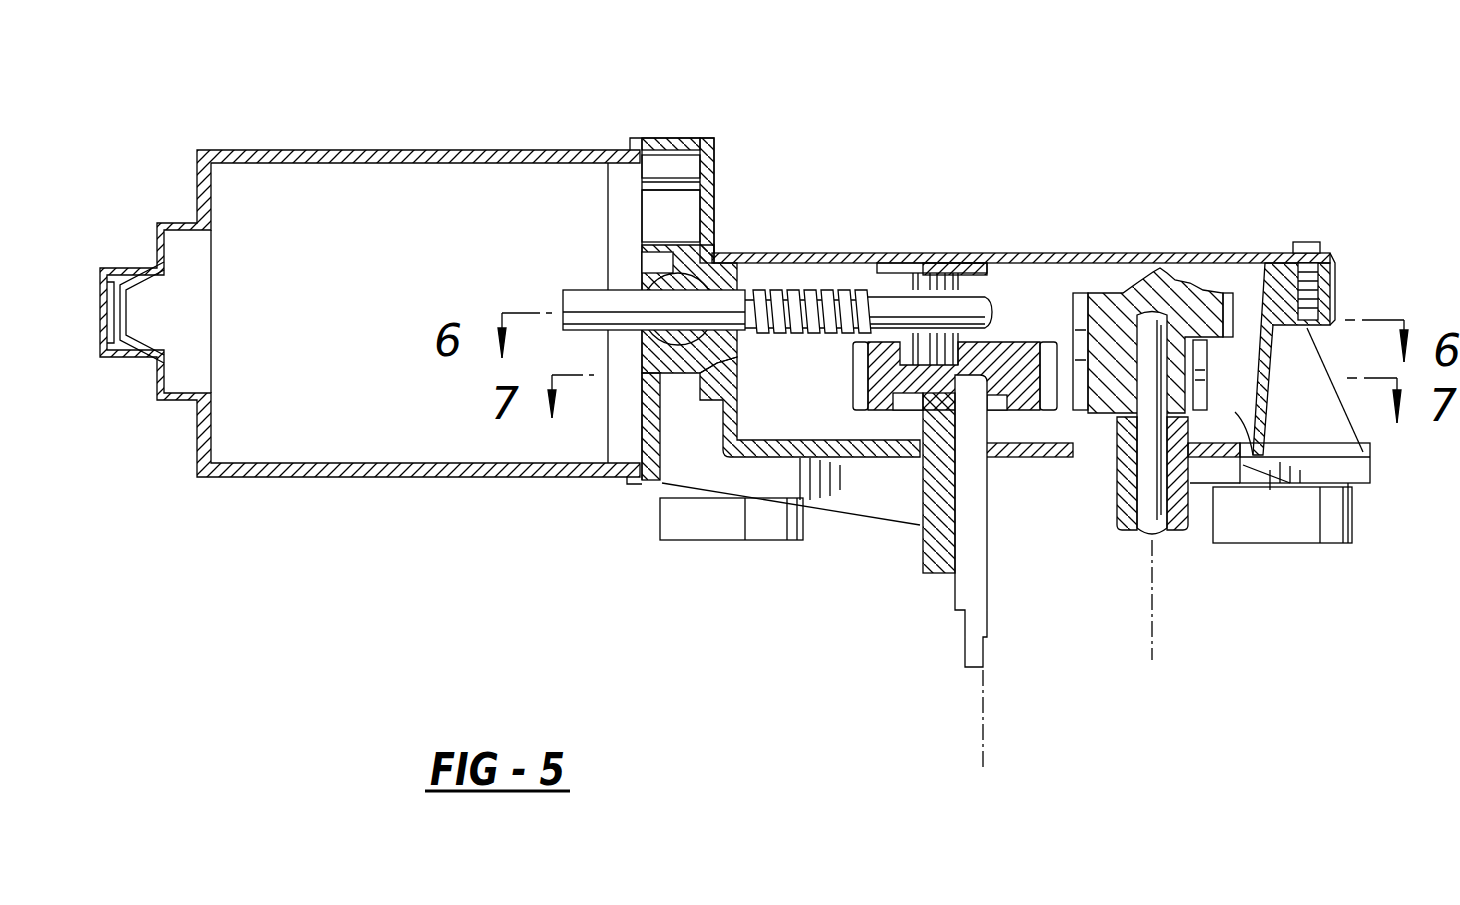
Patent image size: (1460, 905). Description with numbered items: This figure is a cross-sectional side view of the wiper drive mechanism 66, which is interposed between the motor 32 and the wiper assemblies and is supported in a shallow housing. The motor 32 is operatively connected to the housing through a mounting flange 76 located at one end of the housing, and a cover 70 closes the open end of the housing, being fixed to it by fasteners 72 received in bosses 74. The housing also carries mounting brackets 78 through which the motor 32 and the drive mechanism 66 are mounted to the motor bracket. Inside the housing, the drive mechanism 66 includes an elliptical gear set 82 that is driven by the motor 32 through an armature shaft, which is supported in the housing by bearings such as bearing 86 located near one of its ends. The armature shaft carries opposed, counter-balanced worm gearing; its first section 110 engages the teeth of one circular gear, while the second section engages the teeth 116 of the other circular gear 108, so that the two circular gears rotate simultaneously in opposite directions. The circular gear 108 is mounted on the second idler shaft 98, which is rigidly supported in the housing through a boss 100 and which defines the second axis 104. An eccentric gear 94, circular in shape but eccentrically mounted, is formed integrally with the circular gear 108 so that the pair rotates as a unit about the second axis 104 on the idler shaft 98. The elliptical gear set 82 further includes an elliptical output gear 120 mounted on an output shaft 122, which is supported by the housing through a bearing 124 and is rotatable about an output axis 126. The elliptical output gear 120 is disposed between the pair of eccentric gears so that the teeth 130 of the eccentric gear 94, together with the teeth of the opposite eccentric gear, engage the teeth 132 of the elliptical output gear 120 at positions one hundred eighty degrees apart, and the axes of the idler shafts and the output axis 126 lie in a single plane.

The motor 32 is at (490, 150).
The mounting flange 76 is at (714, 158).
The bearing 86 is at (700, 270).
The elliptical gear set 82 is at (802, 422).
The wiper drive mechanism 66 is at (1170, 168).
The first section of worm gearing 110 is at (826, 290).
The elliptical output gear 120 is at (1020, 343).
The teeth of the elliptical gear 132 is at (1057, 412).
The output shaft 122 is at (968, 512).
The bearing 124 is at (928, 573).
The output axis 126 is at (983, 752).
The teeth 116 is at (1078, 292).
The circular gear 108 is at (1220, 290).
The second idler shaft 98 is at (1170, 525).
The boss 100 is at (1125, 508).
The second axis 104 is at (1155, 620).
The eccentric gear 94 is at (1183, 370).
The cover 70 is at (1272, 255).
The fastener 72 is at (1322, 248).
The boss 74 is at (1357, 270).
The mounting bracket 78 is at (1355, 462).
The teeth of the eccentric gear 130 is at (1200, 403).